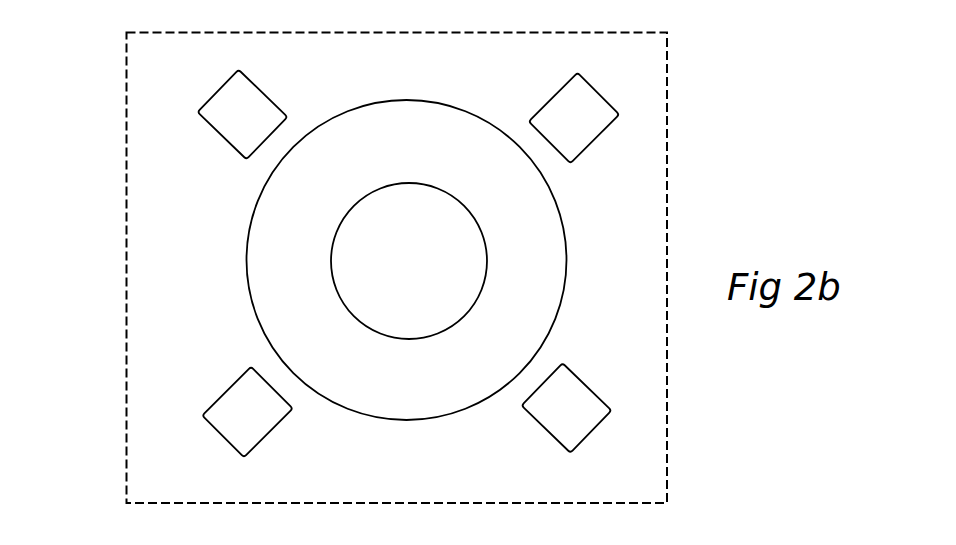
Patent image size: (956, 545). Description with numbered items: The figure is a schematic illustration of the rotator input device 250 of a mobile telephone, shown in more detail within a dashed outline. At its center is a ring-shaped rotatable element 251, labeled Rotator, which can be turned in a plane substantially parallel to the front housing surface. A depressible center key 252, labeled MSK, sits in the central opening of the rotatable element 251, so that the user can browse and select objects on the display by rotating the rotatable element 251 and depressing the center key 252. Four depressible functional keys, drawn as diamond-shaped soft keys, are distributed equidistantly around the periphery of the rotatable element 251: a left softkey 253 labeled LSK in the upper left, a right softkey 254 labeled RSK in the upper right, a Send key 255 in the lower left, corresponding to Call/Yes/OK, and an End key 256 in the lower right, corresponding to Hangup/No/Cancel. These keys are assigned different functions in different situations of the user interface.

The rotator input device 250 is at (80, 68).
The rotatable element 251 is at (266, 210).
The center key 252 is at (344, 277).
The left softkey 253 is at (216, 101).
The right softkey 254 is at (558, 101).
The Send key 255 is at (224, 428).
The End key 256 is at (557, 428).